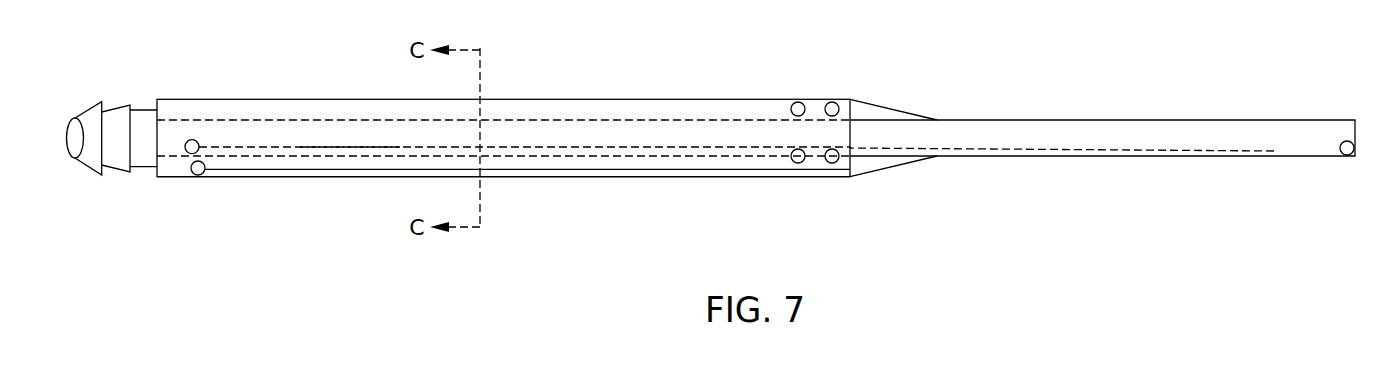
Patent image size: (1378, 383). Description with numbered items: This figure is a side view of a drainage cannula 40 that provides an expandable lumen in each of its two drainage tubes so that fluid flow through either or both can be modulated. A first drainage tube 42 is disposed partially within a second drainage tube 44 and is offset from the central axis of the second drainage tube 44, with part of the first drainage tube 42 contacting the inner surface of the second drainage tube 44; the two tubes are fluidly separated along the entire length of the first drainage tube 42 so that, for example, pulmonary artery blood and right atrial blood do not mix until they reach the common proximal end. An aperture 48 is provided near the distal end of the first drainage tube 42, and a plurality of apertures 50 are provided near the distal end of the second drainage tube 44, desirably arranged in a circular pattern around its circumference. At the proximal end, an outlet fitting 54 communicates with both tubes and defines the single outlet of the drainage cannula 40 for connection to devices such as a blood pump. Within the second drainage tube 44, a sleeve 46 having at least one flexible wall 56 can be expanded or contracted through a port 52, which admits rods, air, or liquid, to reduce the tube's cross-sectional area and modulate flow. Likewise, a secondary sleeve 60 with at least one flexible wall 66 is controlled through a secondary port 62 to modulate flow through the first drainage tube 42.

The drainage cannula 40 is at (925, 47).
The first drainage tube 42 is at (708, 119).
The second drainage tube 44 is at (608, 99).
The sleeve 46 is at (345, 177).
The aperture 48 is at (1347, 156).
The apertures 50 is at (832, 102).
The port 52 is at (199, 176).
The outlet fitting 54 is at (119, 86).
The wall 56 is at (268, 170).
The secondary sleeve 60 is at (337, 150).
The secondary port 62 is at (192, 139).
The wall 66 is at (260, 146).